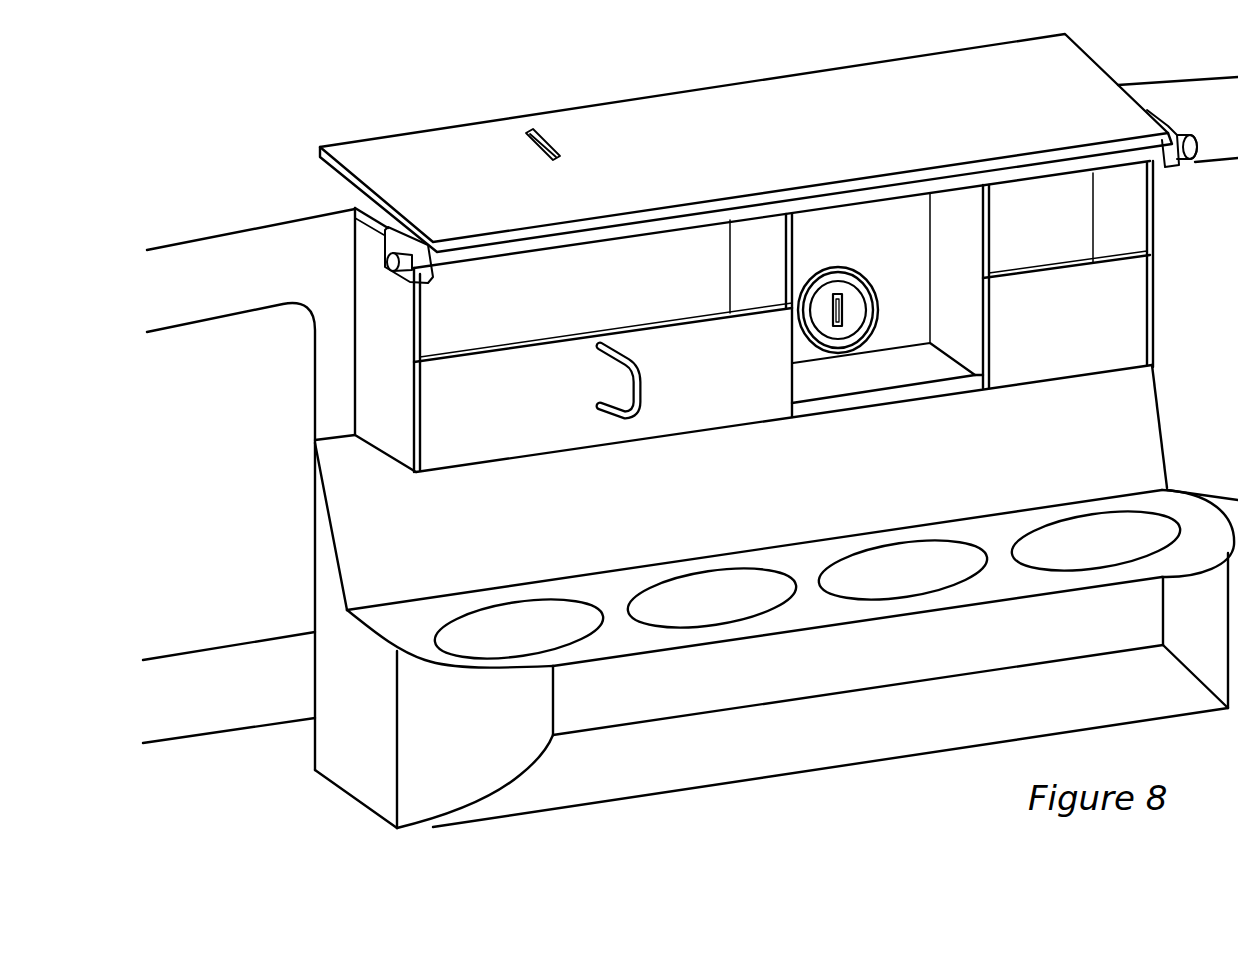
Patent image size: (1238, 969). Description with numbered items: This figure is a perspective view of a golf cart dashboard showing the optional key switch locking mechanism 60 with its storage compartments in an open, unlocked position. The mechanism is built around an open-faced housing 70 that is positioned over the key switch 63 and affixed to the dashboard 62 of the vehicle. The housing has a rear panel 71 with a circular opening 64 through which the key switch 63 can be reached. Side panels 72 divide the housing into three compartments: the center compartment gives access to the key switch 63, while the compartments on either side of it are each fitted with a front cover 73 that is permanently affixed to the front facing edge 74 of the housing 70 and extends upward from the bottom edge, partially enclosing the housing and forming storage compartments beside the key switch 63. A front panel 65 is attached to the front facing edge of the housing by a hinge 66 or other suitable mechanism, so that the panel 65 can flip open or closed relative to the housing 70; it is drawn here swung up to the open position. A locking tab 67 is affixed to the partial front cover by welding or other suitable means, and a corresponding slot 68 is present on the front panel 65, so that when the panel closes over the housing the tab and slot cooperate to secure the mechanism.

The key switch locking mechanism 60 is at (304, 103).
The dashboard 62 is at (240, 262).
The key switch 63 is at (852, 310).
The circular opening 64 is at (825, 352).
The front panel 65 is at (625, 122).
The hinge 66 is at (1182, 152).
The locking tab 67 is at (628, 418).
The slot 68 is at (532, 133).
The housing 70 is at (372, 365).
The rear panel 71 is at (900, 297).
The side panels 72 is at (388, 440).
The front cover 73 is at (513, 433).
The front facing edge 74 is at (877, 403).